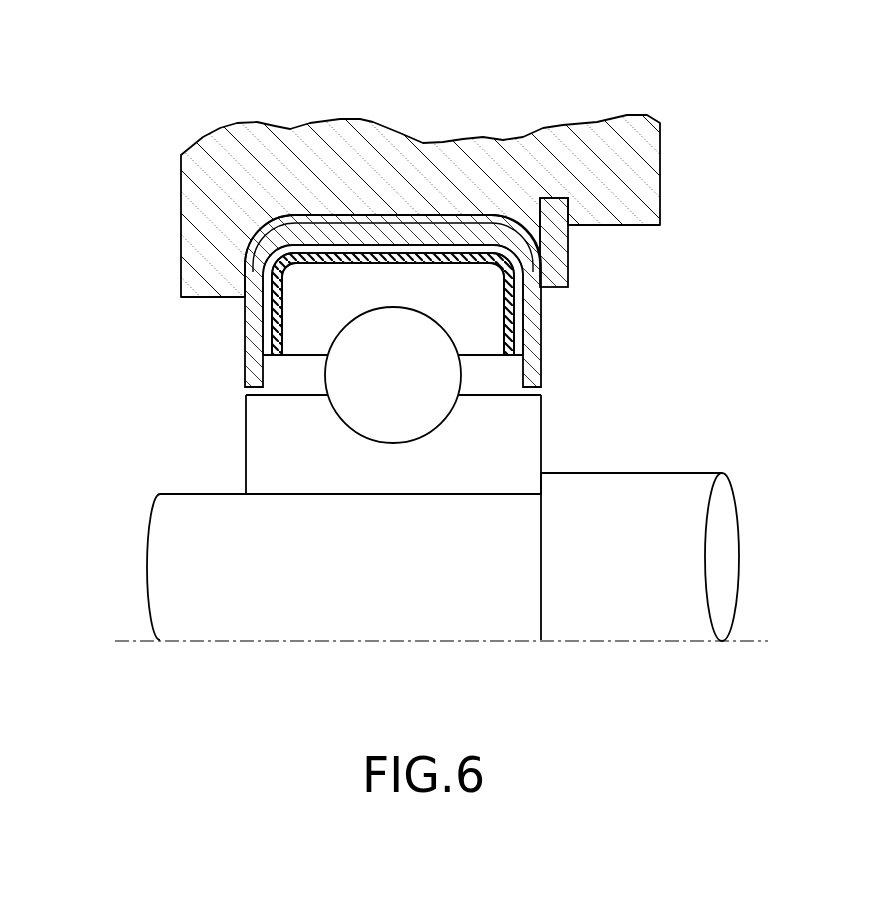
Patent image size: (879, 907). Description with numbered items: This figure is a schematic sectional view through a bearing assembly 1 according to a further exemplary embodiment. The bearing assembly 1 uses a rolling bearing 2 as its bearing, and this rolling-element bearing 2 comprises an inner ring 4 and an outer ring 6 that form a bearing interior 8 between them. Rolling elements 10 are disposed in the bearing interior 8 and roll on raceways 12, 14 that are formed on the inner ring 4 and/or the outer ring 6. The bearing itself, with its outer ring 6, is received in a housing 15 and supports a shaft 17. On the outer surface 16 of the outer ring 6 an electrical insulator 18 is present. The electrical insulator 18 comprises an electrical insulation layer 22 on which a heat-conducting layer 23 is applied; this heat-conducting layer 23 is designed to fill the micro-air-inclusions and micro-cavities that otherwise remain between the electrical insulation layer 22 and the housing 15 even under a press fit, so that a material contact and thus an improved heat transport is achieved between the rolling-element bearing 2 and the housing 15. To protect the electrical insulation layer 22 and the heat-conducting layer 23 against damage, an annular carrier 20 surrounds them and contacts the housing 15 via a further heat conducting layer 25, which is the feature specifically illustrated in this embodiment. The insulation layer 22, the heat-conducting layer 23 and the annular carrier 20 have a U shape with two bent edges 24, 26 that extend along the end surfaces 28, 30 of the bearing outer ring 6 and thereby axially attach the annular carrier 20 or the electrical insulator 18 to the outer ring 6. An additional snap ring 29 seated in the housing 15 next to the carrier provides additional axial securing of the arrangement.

The bearing assembly 1 is at (397, 39).
The rolling bearing 2 is at (332, 432).
The inner ring 4 is at (265, 472).
The outer ring 6 is at (308, 338).
The bearing interior 8 is at (484, 376).
The rolling elements 10 is at (367, 415).
The raceway 12 is at (415, 443).
The raceway 14 is at (407, 255).
The housing 15 is at (200, 181).
The outer surface 16 is at (323, 266).
The shaft 17 is at (172, 582).
The electrical insulator 18 is at (407, 329).
The annular carrier 20 is at (250, 340).
The electrical insulation layer 22 is at (507, 332).
The heat-conducting layer 23 is at (517, 300).
The bent edge 24 is at (258, 370).
The further heat conducting layer 25 is at (503, 223).
The bent edge 26 is at (538, 377).
The end surface 28 is at (284, 327).
The snap ring 29 is at (562, 240).
The end surface 30 is at (502, 312).